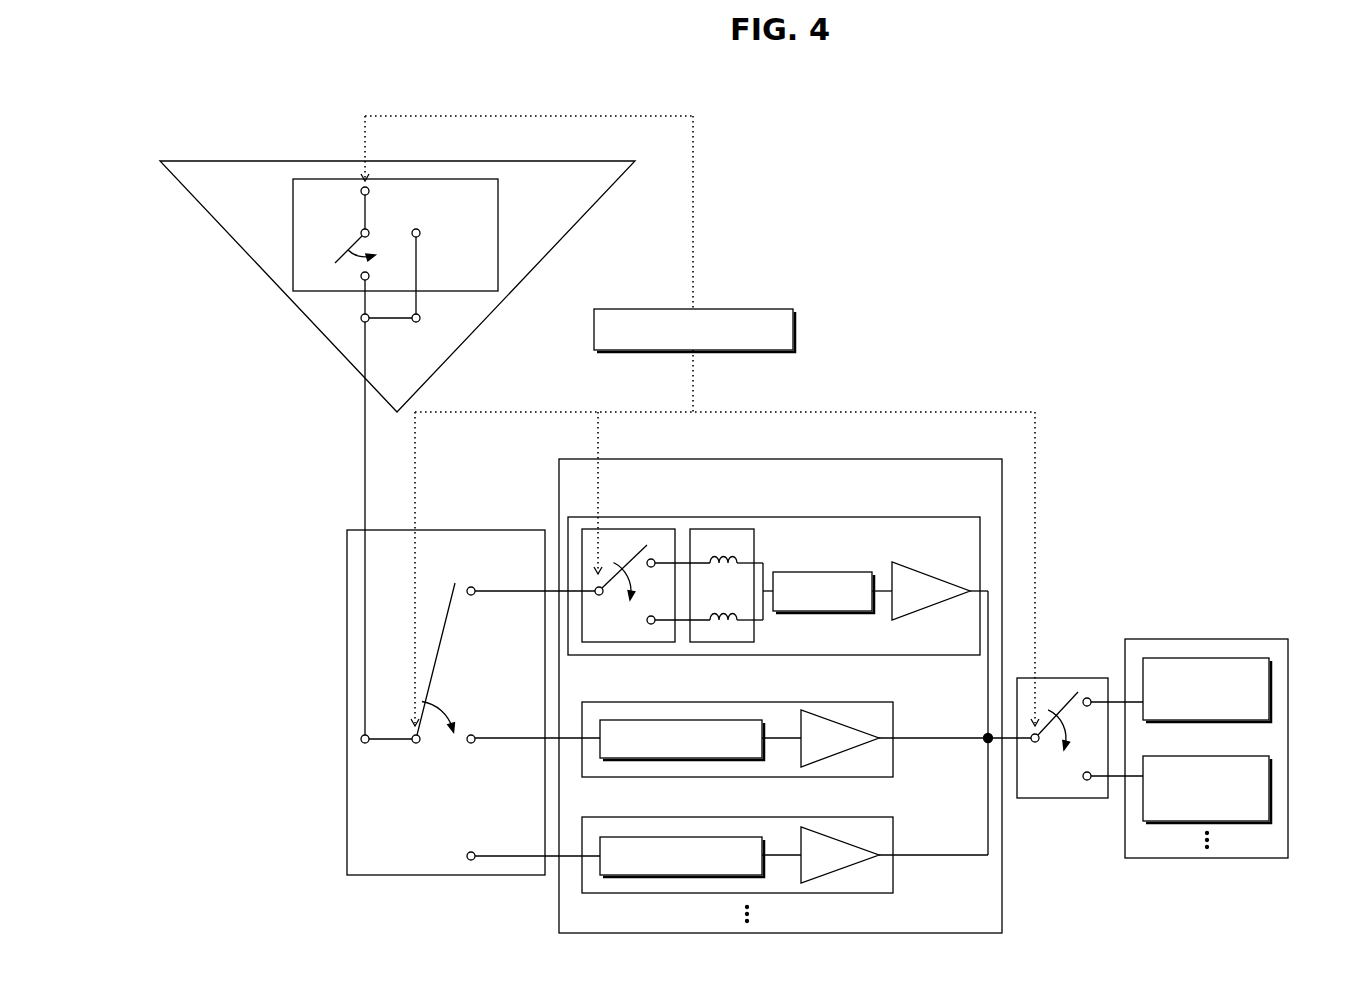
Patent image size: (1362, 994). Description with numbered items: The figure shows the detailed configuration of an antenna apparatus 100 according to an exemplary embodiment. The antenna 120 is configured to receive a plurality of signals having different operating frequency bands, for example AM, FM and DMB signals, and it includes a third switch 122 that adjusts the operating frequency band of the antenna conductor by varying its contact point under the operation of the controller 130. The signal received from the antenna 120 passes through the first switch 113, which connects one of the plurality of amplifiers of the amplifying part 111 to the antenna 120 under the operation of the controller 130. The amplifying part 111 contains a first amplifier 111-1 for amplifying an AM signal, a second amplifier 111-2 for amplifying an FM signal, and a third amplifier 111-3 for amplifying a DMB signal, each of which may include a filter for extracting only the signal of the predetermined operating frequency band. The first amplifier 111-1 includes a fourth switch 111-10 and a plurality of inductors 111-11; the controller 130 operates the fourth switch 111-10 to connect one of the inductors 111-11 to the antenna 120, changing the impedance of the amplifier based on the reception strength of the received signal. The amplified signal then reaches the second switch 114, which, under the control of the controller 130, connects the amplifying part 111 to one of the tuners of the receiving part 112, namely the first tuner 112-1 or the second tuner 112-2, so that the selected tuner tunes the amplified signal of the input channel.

The antenna apparatus 100 is at (207, 118).
The antenna 120 is at (497, 161).
The third switch 122 is at (498, 208).
The controller 130 is at (725, 306).
The amplifying part 111 is at (786, 459).
The first amplifier 111-1 is at (915, 506).
The fourth switch 111-10 is at (628, 528).
The inductors 111-11 is at (718, 528).
The second amplifier 111-2 is at (838, 702).
The third amplifier 111-3 is at (838, 817).
The first switch 113 is at (487, 530).
The second switch 114 is at (1068, 678).
The receiving part 112 is at (1205, 639).
The first tuner 112-1 is at (1269, 702).
The second tuner 112-2 is at (1269, 776).